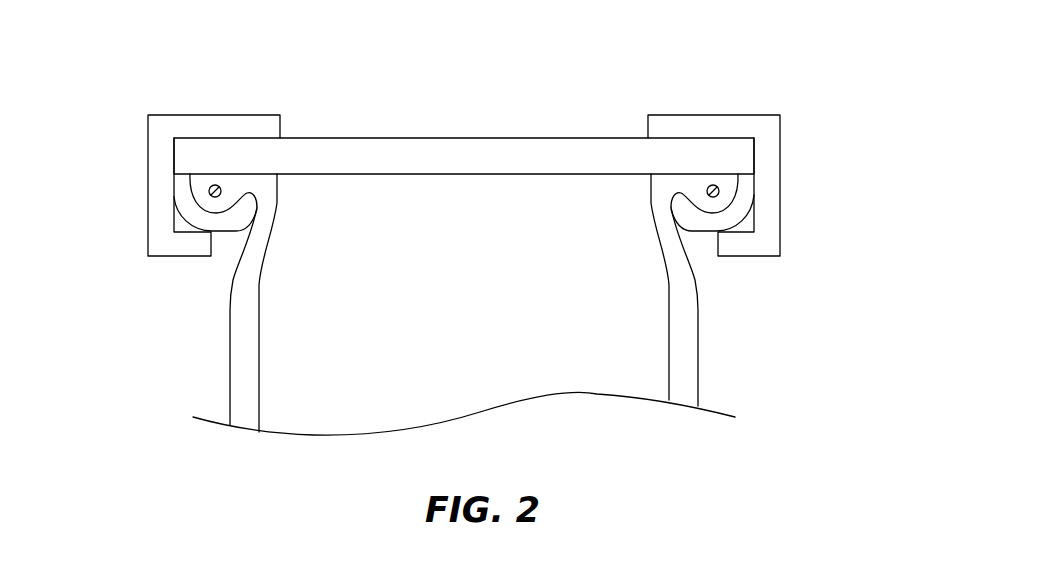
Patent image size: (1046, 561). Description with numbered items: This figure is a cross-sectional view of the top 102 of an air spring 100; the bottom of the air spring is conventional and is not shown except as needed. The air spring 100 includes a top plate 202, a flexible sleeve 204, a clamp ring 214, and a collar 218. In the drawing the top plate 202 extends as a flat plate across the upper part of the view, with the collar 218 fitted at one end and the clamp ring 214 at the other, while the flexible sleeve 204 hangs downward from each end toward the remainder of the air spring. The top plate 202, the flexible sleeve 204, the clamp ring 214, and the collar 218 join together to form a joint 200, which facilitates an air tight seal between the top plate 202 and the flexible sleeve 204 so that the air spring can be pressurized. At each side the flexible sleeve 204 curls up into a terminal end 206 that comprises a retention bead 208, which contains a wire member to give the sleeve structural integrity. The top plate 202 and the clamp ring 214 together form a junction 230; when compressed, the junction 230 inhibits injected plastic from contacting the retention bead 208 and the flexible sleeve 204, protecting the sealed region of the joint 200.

The air spring 100 is at (835, 122).
The top 102 is at (752, 352).
The joint 200 is at (308, 117).
The top plate 202 is at (548, 138).
The flexible sleeve 204 is at (243, 323).
The terminal end 206 is at (267, 188).
The retention bead 208 is at (727, 185).
The clamp ring 214 is at (738, 213).
The collar 218 is at (767, 127).
The junction 230 is at (187, 173).